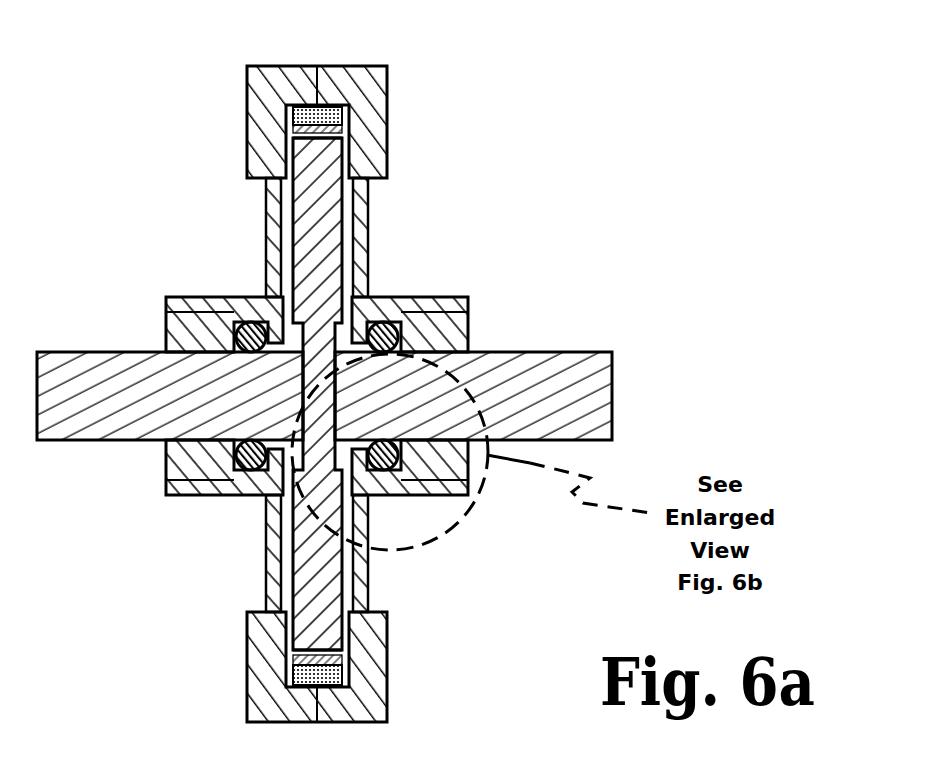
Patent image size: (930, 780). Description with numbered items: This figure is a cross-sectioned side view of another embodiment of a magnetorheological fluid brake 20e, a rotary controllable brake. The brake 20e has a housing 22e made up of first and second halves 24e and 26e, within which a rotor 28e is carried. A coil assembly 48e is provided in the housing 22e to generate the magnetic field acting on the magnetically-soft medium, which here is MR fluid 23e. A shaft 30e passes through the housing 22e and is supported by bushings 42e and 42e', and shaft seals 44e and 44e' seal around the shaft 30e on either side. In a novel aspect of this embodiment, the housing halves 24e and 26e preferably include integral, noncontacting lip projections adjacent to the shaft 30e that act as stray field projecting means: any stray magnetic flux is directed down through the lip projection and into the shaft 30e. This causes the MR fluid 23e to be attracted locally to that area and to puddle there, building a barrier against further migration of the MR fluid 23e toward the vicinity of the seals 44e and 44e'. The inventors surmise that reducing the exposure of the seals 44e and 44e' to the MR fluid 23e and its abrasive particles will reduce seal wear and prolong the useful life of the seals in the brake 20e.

The magnetorheological fluid brake 20e is at (236, 667).
The housing 22e is at (404, 169).
The MR fluid 23e is at (277, 162).
The first housing half 24e is at (262, 92).
The second housing half 26e is at (372, 93).
The rotor 28e is at (283, 557).
The shaft 30e is at (612, 393).
The bushing 42e is at (392, 301).
The bushing 42e' is at (257, 486).
The shaft seal 44e is at (479, 446).
The shaft seal 44e' is at (169, 449).
The coil assembly 48e is at (292, 697).